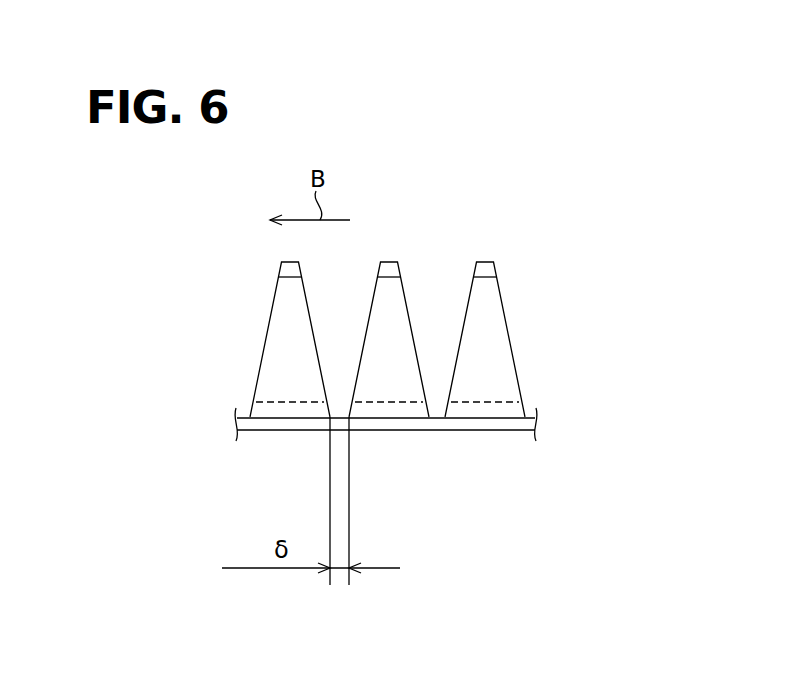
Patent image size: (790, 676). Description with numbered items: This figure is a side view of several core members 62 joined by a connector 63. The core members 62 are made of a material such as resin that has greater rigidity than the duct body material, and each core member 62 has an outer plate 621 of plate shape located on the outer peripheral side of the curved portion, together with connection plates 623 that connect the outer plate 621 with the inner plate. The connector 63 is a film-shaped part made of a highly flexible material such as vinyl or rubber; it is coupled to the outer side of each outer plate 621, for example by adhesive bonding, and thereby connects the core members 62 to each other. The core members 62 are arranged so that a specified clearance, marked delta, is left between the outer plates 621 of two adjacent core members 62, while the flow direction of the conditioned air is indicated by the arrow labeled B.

The core member 62 is at (273, 297).
The outer plate 621 is at (490, 402).
The connection plate 623 is at (387, 372).
The connector 63 is at (260, 420).